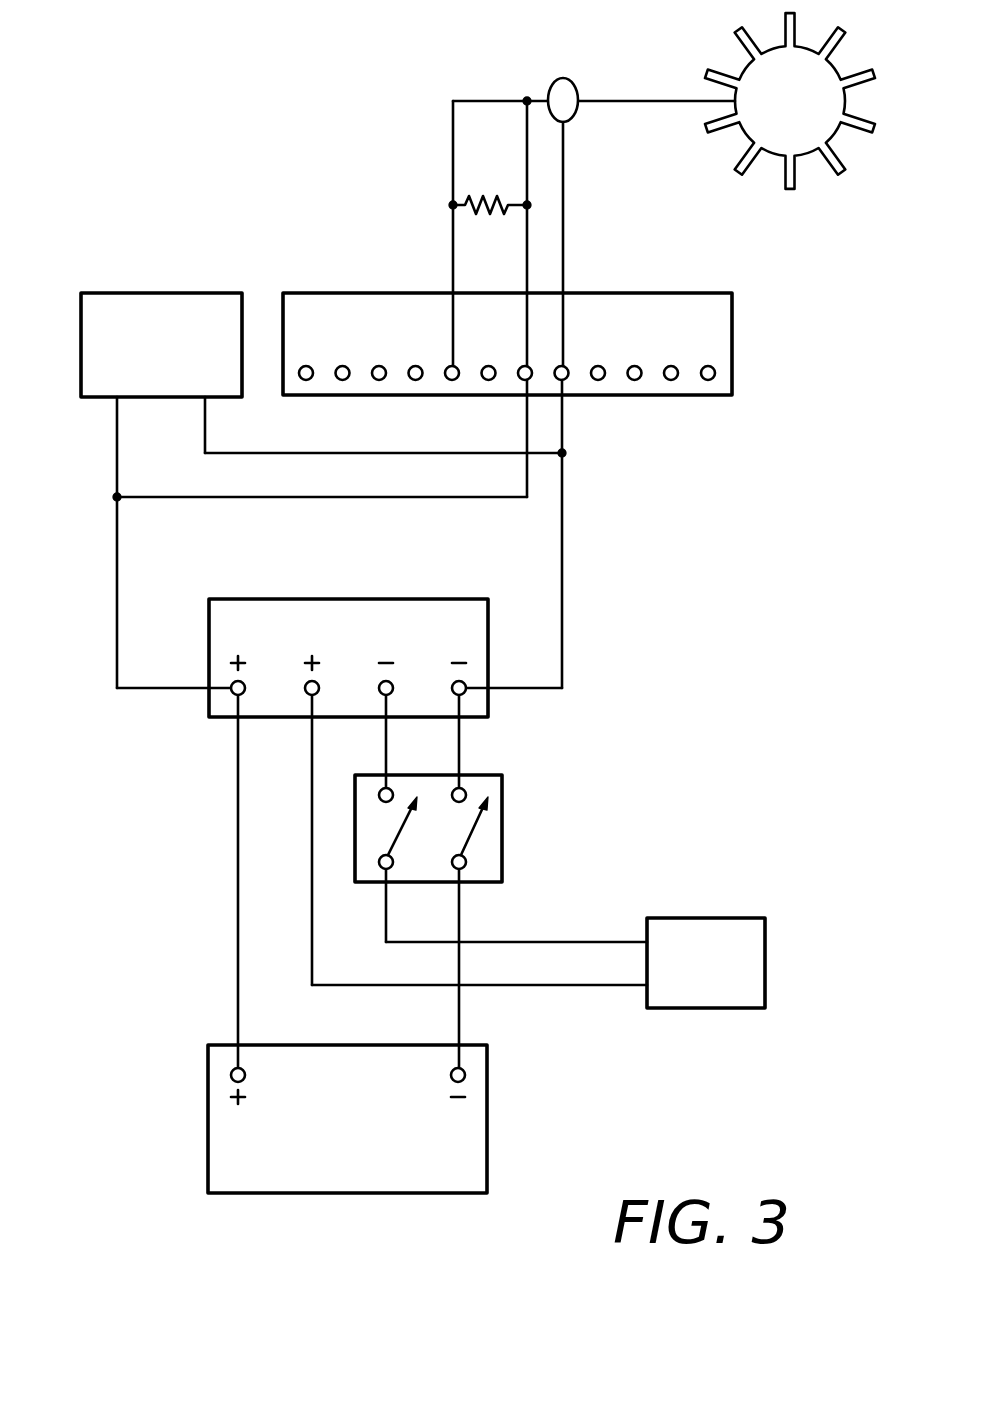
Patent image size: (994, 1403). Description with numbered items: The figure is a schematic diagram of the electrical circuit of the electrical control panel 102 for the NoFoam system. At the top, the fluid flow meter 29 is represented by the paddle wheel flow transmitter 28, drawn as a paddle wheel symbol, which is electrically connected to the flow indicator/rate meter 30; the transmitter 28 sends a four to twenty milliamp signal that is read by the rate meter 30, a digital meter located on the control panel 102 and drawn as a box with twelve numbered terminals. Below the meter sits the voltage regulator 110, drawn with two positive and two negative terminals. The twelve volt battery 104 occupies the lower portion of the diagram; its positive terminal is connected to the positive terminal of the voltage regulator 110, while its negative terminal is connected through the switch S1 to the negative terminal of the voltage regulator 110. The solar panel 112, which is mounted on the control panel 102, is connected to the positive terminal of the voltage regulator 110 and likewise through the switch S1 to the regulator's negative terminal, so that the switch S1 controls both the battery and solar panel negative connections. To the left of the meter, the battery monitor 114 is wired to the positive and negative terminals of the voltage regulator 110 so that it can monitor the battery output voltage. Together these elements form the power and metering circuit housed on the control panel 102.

The electrical control panel 102 is at (228, 224).
The paddle wheel flow transmitter 28 is at (810, 108).
The fluid flow meter 29 is at (673, 205).
The flow indicator/rate meter 30 is at (337, 293).
The voltage regulator 110 is at (263, 599).
The solar panel 112 is at (693, 918).
The battery monitor 114 is at (88, 293).
The battery 104 is at (270, 1193).
The switch S1 is at (428, 828).